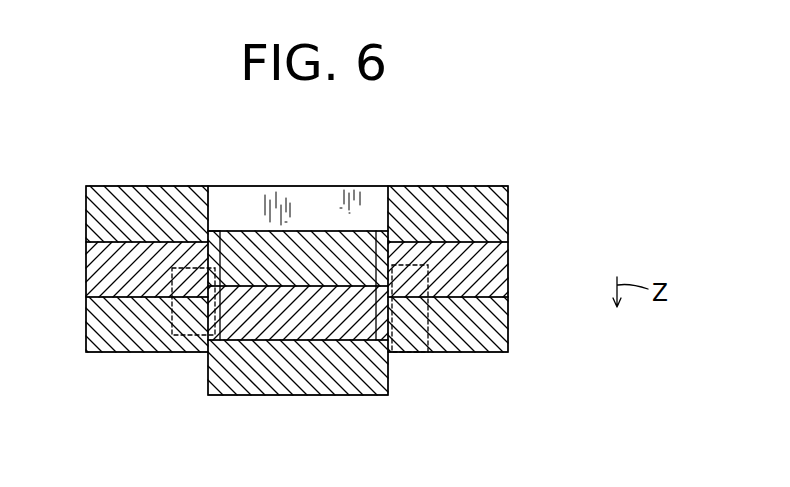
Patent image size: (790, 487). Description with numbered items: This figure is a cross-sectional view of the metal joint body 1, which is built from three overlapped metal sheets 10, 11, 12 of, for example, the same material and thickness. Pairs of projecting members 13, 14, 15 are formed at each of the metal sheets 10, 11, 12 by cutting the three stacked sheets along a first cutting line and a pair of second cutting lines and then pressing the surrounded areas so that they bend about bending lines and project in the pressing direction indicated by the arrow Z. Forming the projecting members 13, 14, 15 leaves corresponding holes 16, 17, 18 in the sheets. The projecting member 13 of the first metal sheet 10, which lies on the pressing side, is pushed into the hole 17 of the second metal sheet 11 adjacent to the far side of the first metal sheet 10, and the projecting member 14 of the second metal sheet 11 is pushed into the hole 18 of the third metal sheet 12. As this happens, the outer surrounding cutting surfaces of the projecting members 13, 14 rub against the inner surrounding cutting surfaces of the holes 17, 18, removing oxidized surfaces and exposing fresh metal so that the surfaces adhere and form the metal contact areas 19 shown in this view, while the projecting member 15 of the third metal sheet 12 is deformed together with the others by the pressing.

The metal joint body 1 is at (553, 165).
The first metal sheet 10 is at (463, 202).
The second metal sheet 11 is at (493, 267).
The third metal sheet 12 is at (503, 338).
The projecting member 13 is at (333, 241).
The projecting member 14 is at (347, 325).
The projecting member 15 is at (303, 384).
The hole 16 is at (208, 204).
The hole 17 is at (210, 258).
The hole 18 is at (235, 320).
The metal contact area 19 is at (170, 352).